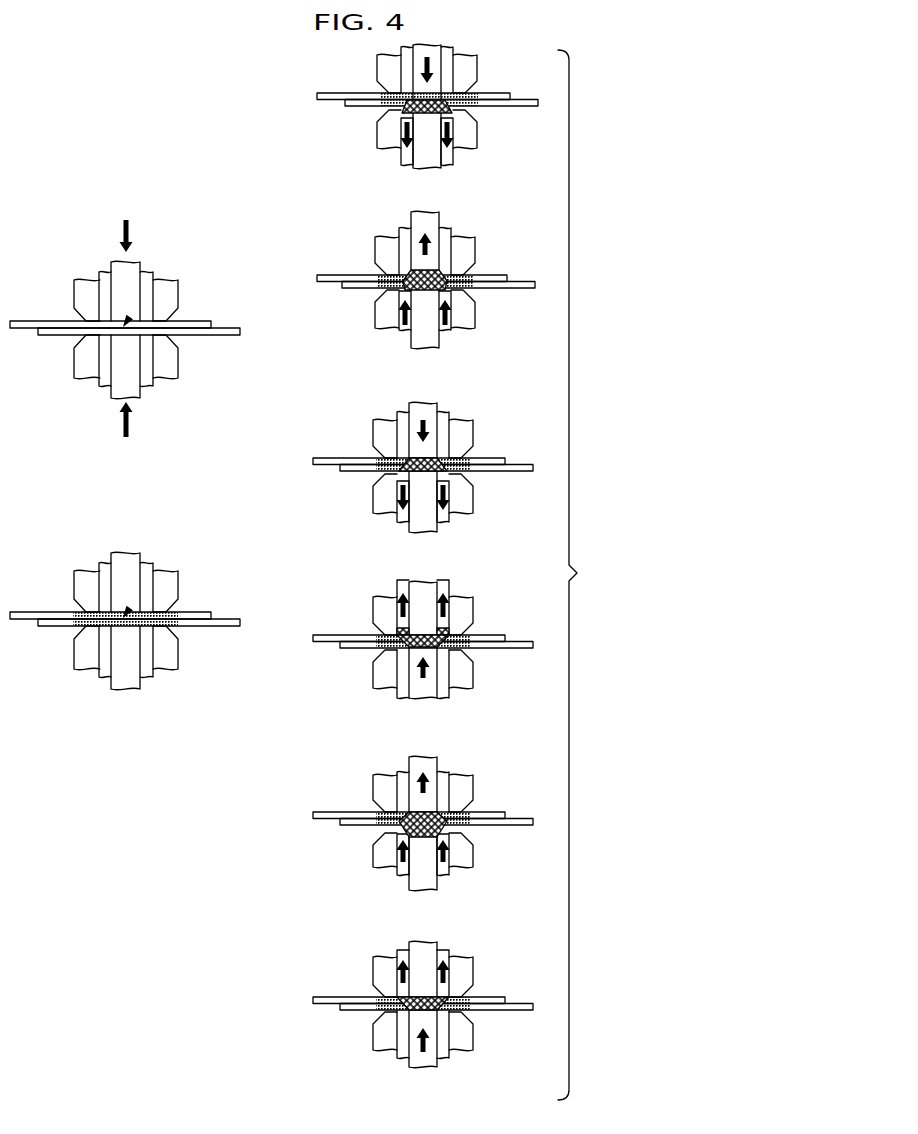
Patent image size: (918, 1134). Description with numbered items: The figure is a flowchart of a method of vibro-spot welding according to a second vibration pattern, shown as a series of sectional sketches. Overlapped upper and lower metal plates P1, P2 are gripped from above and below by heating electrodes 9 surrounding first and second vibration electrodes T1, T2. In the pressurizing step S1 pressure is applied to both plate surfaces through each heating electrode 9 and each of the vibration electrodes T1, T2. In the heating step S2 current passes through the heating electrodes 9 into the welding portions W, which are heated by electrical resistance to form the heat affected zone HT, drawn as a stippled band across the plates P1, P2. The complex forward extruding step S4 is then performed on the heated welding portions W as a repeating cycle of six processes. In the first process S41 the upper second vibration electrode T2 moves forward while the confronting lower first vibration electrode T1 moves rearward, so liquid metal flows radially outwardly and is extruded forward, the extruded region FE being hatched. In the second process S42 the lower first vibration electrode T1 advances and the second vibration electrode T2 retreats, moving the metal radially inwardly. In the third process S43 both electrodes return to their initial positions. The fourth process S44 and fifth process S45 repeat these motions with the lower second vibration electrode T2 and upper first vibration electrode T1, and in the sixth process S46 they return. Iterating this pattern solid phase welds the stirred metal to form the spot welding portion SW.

The first vibration electrode T1 is at (148, 281).
The second vibration electrode T2 is at (133, 270).
The heating electrode 9 is at (170, 296).
The upper metal plate P1 is at (47, 326).
The lower metal plate P2 is at (213, 336).
The welding portion W is at (130, 317).
The heat affected zone HT is at (168, 626).
The forged/deformed portion FE is at (455, 104).
The spot welding portion SW is at (445, 465).
The pressurizing step S1 is at (126, 449).
The heating step S2 is at (126, 702).
The complex forward extruding step S4 is at (590, 575).
The first process S41 is at (427, 182).
The second process S42 is at (425, 369).
The third process S43 is at (423, 550).
The fourth process S44 is at (423, 727).
The fifth process S45 is at (423, 909).
The sixth process S46 is at (423, 1092).